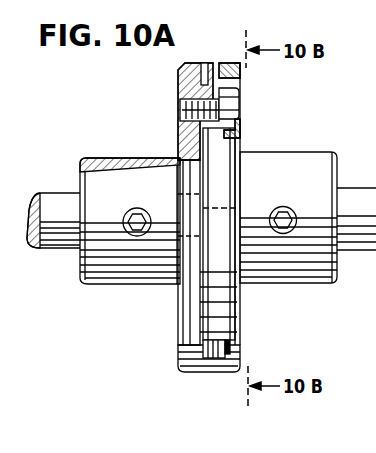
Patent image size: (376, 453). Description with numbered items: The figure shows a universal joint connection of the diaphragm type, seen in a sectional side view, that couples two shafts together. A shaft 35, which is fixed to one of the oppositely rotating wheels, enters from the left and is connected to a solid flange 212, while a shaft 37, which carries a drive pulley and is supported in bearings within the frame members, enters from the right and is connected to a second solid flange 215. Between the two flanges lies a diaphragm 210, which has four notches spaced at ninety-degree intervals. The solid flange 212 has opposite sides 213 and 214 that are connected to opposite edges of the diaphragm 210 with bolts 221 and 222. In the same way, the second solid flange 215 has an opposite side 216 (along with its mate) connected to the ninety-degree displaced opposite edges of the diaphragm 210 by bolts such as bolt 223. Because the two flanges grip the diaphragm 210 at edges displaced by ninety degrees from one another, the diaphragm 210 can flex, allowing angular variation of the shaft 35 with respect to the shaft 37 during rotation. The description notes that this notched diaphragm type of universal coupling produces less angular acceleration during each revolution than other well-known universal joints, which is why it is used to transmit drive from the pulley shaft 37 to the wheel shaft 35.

The shaft 35 is at (68, 240).
The shaft 37 is at (375, 275).
The diaphragm 210 is at (176, 122).
The solid flange 212 is at (133, 277).
The side of flange 213 is at (190, 354).
The side of flange 214 is at (180, 80).
The second solid flange 215 is at (273, 158).
The side of second flange 216 is at (242, 268).
The bolt 221 is at (223, 368).
The bolt 222 is at (241, 105).
The bolt 223 is at (218, 210).